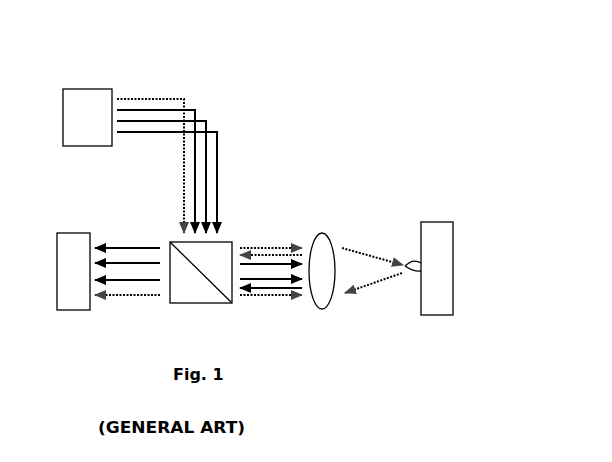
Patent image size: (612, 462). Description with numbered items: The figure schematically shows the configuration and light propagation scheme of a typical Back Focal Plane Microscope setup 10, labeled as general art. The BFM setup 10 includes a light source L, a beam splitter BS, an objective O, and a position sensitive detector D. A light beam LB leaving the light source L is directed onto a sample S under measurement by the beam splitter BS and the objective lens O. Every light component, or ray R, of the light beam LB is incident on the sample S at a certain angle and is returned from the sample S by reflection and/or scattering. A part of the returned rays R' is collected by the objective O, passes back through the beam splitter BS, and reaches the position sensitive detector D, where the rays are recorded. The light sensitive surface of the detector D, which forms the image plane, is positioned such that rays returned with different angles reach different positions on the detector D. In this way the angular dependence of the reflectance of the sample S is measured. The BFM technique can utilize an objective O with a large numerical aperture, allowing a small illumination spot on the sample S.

The BFM setup 10 is at (386, 119).
The light source L is at (87, 131).
The light beam LB is at (223, 120).
The beam splitter BS is at (201, 289).
The position sensitive detector D is at (108, 285).
The light component (ray) R is at (299, 222).
The returned rays R' is at (322, 327).
The objective O is at (322, 285).
The sample S is at (429, 280).